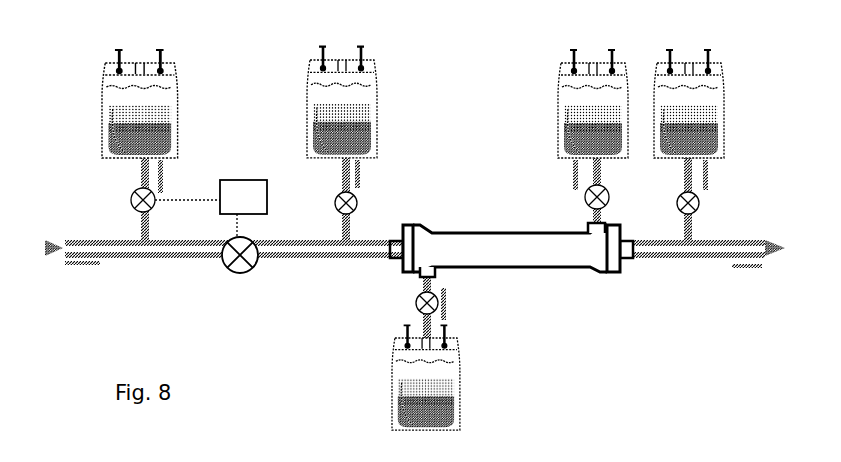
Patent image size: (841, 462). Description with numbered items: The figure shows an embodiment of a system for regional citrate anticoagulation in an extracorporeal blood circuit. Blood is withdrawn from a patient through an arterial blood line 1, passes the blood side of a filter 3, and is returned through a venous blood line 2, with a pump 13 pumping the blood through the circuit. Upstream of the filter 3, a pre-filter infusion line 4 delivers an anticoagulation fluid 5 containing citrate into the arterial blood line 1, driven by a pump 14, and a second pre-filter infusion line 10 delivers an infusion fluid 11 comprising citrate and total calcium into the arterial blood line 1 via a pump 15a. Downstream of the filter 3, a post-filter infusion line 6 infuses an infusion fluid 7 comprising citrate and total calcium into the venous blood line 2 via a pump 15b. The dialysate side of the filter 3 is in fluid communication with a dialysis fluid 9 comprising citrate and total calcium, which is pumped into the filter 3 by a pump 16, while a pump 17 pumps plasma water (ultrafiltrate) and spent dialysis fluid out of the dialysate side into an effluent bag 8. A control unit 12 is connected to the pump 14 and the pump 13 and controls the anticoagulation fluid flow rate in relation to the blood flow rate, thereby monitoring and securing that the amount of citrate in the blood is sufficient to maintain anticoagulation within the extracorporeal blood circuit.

The arterial blood line 1 is at (113, 262).
The venous blood line 2 is at (668, 257).
The filter 3 is at (485, 222).
The pre-filter infusion line 4 is at (135, 238).
The anticoagulation fluid 5 is at (98, 95).
The post-filter infusion line 6 is at (700, 228).
The infusion fluid 7 is at (730, 97).
The effluent bag 8 is at (462, 385).
The dialysis fluid 9 is at (557, 97).
The second pre-filter infusion line 10 is at (320, 235).
The infusion fluid 11 is at (385, 105).
The control unit 12 is at (243, 208).
The pump 13 is at (239, 279).
The pump 14 is at (152, 207).
The pump 15a is at (358, 198).
The pump 15b is at (700, 197).
The pump 16 is at (610, 195).
The pump 17 is at (405, 300).